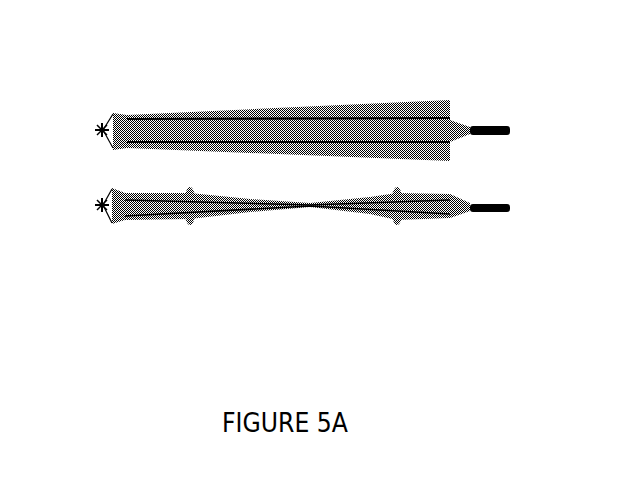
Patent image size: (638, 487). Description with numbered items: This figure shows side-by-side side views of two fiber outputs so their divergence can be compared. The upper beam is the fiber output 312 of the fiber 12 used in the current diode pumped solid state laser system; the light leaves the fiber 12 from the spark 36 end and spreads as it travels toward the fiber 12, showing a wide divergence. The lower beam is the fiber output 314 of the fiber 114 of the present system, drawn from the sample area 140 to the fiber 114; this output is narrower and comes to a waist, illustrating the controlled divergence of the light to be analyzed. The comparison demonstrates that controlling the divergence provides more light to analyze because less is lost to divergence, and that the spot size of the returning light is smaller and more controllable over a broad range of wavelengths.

The fiber 12 is at (485, 126).
The spark 36 is at (101, 128).
The fiber output 312 is at (298, 108).
The fiber 114 is at (485, 213).
The sample area 140 is at (100, 224).
The fiber output 314 is at (307, 210).